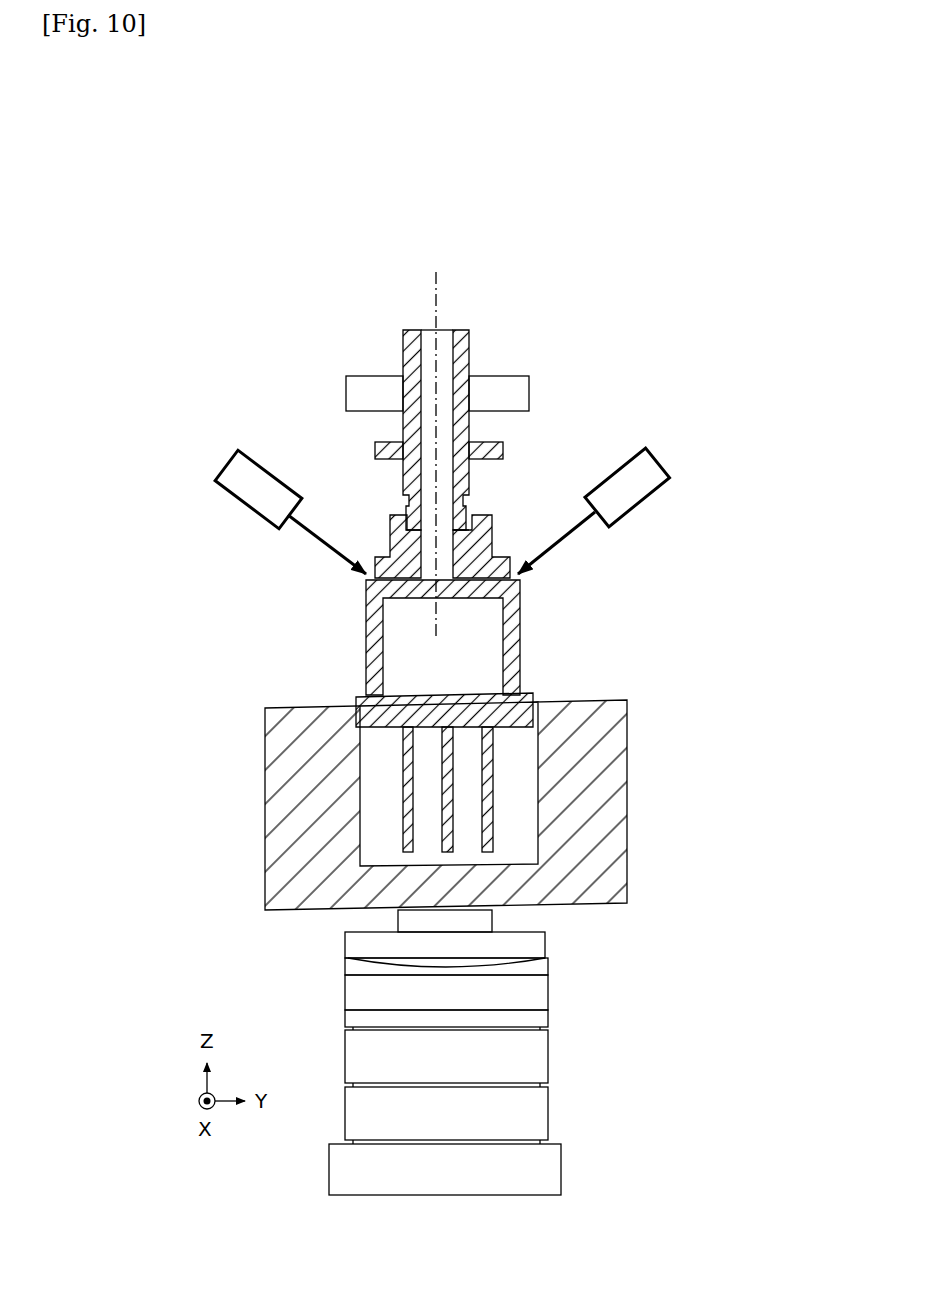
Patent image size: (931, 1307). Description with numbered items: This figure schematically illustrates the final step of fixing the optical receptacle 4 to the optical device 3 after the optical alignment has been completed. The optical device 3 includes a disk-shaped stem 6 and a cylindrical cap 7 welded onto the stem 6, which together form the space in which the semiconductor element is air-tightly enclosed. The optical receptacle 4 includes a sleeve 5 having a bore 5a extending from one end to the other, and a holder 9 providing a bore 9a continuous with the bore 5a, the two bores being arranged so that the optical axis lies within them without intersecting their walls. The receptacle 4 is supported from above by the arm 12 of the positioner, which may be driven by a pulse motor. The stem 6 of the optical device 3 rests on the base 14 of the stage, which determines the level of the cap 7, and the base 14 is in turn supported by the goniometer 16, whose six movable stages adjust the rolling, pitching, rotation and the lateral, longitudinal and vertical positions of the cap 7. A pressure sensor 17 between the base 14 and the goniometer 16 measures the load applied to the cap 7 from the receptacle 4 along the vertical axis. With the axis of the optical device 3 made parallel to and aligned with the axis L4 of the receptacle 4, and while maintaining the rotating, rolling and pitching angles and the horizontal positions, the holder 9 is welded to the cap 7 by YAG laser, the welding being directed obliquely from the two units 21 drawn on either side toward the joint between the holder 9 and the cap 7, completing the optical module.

The optical device 3 is at (458, 716).
The optical receptacle 4 is at (448, 443).
The sleeve 5 is at (401, 350).
The bore 5a is at (451, 338).
The stem 6 is at (367, 702).
The cap 7 is at (365, 627).
The holder 9 is at (388, 528).
The bore 9a is at (452, 532).
The arm 12 is at (518, 392).
The base 14 is at (612, 783).
The goniometer 16 is at (597, 934).
The pressure sensor 17 is at (483, 915).
The sensor 21 is at (248, 513).
The optical axis of the receptacle L4 is at (434, 443).